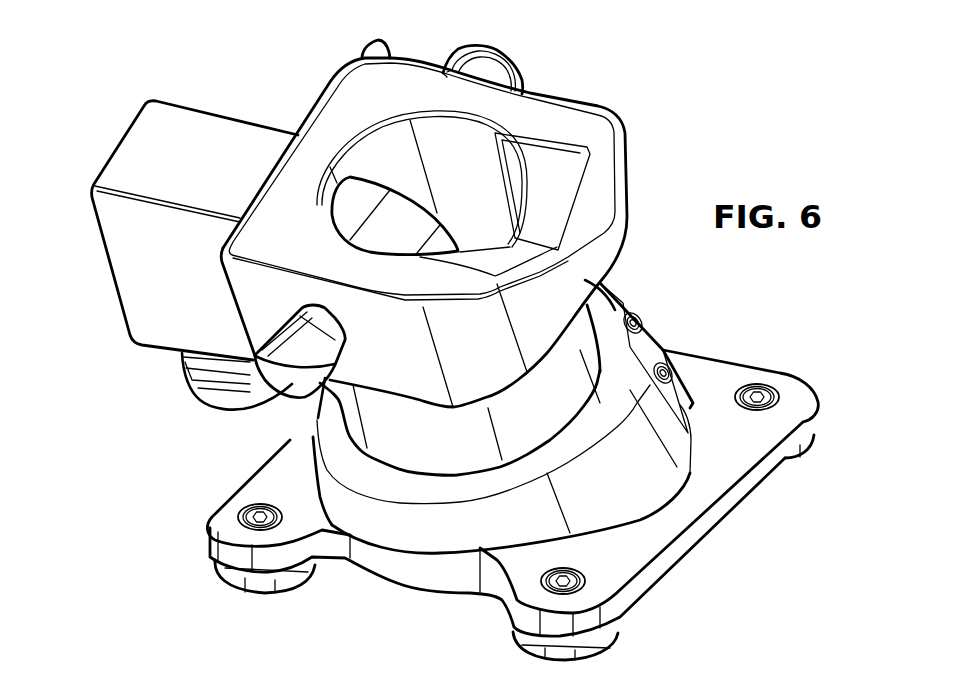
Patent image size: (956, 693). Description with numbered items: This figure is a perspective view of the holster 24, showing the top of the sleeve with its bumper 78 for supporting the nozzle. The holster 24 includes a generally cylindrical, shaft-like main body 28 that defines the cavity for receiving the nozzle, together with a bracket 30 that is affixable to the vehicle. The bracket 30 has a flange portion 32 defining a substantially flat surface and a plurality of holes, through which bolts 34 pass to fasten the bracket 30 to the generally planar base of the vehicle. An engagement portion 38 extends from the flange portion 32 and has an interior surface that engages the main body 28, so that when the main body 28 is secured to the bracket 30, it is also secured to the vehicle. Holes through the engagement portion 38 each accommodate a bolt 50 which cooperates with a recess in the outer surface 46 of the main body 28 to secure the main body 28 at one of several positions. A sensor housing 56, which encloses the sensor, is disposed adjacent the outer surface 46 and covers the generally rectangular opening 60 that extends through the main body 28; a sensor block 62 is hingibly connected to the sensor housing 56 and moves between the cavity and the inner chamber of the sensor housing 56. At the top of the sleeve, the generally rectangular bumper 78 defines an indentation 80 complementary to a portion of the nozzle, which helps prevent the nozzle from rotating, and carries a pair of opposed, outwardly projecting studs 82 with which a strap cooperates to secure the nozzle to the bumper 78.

The holster 24 is at (648, 134).
The main body 28 is at (338, 425).
The bracket 30 is at (473, 616).
The flange portion 32 is at (733, 365).
The bolts 34 is at (766, 396).
The engagement portion 38 is at (428, 547).
The outer surface 46 is at (612, 295).
The bolt 50 is at (636, 326).
The sensor housing 56 is at (148, 104).
The opening 60 is at (363, 177).
The sensor block 62 is at (392, 190).
The bumper 78 is at (363, 49).
The indentation 80 is at (563, 212).
The studs 82 is at (490, 78).